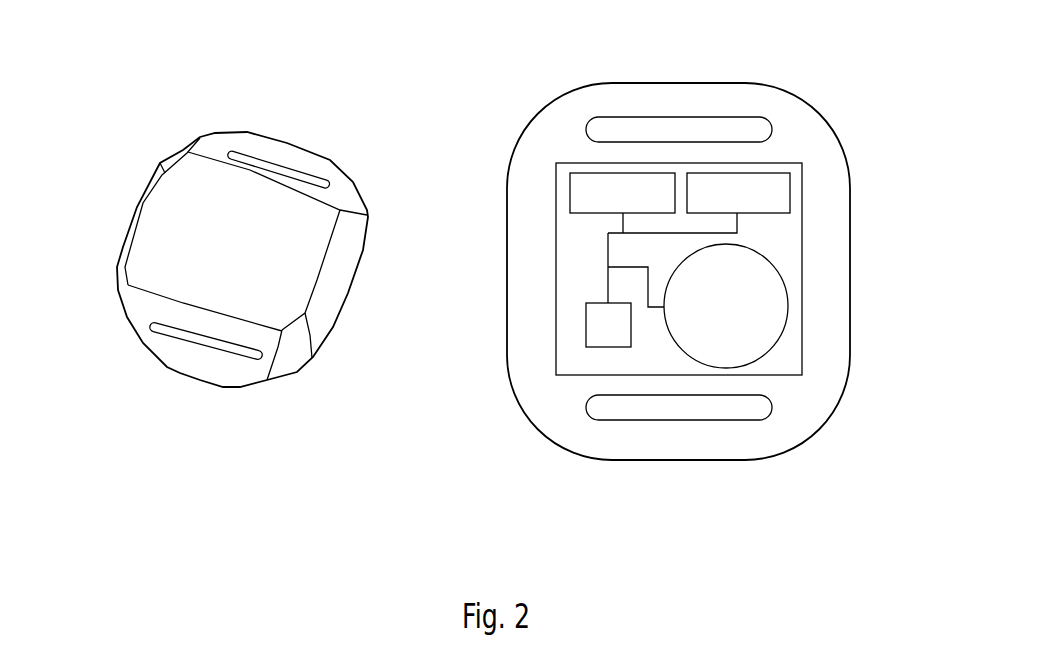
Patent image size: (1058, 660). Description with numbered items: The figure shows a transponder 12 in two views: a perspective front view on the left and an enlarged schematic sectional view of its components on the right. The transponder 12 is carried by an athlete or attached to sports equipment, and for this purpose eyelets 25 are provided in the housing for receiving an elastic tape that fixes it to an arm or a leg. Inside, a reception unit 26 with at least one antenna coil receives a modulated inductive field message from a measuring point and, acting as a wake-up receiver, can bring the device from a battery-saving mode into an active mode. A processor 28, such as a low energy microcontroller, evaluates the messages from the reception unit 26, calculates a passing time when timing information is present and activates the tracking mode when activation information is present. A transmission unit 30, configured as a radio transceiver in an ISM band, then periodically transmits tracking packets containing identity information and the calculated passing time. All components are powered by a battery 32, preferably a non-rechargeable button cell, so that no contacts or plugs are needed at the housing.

The transponder 12 is at (150, 87).
The eyelets 25 is at (197, 345).
The reception unit 26 is at (790, 194).
The processor 28 is at (586, 325).
The transmission unit 30 is at (570, 193).
The battery 32 is at (790, 306).